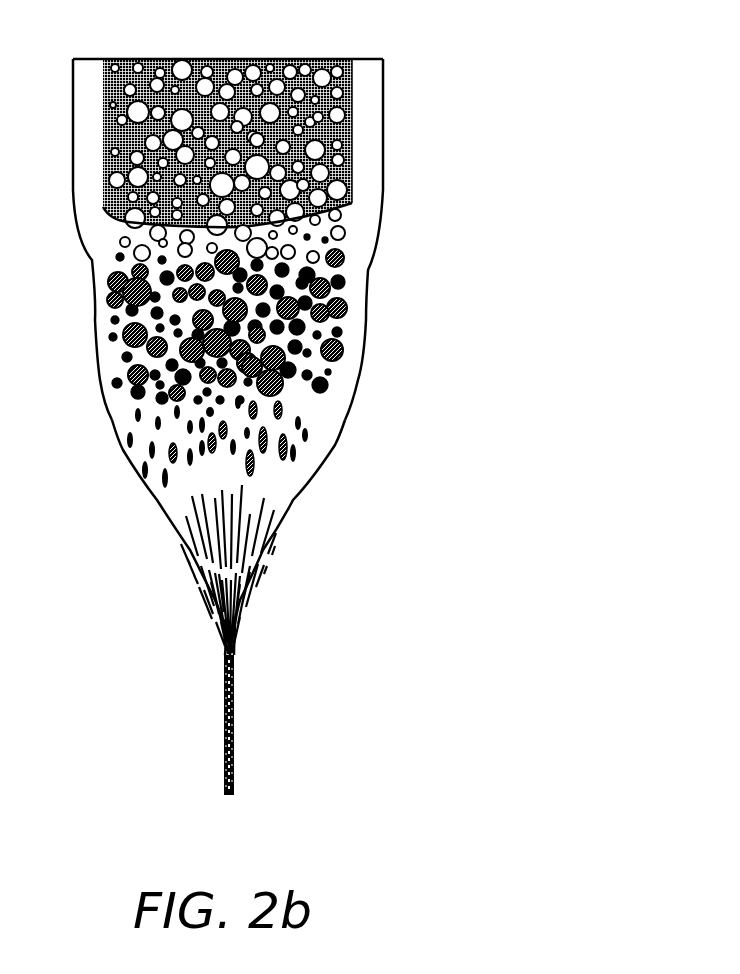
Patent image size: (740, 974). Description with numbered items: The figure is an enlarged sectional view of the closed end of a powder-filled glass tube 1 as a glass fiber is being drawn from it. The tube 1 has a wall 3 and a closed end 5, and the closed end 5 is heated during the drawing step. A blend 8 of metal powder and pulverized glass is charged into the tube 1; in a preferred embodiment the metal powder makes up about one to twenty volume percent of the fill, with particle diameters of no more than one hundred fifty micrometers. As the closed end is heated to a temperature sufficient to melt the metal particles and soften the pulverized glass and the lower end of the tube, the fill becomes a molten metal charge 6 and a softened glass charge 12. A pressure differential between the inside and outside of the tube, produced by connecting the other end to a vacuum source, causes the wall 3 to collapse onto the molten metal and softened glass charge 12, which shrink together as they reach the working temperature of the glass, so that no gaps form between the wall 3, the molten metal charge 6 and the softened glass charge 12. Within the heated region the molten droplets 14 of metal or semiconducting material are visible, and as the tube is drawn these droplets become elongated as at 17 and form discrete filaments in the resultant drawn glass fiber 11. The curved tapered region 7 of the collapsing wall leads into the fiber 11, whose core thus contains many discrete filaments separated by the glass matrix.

The glass tube 1 is at (235, 425).
The wall 3 is at (377, 85).
The closed end 5 is at (335, 445).
The molten metal charge 6 is at (307, 375).
The container wall 7 is at (372, 270).
The blend of metal powder and pulverized glass 8 is at (372, 198).
The drawn glass fiber 11 is at (223, 743).
The softened glass charge 12 is at (110, 238).
The molten droplets 14 is at (283, 495).
The elongated molten metal droplets 17 is at (231, 700).